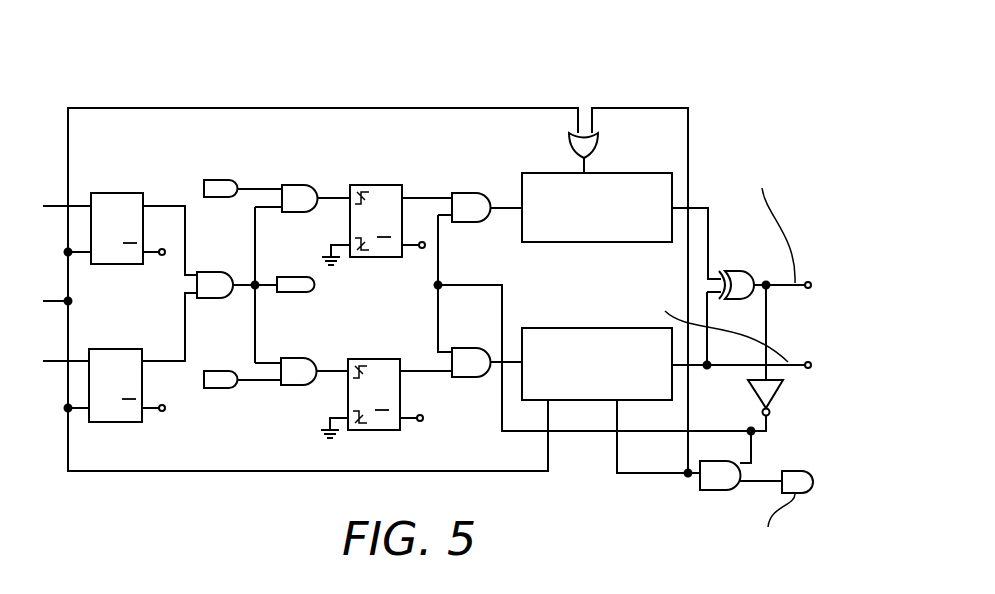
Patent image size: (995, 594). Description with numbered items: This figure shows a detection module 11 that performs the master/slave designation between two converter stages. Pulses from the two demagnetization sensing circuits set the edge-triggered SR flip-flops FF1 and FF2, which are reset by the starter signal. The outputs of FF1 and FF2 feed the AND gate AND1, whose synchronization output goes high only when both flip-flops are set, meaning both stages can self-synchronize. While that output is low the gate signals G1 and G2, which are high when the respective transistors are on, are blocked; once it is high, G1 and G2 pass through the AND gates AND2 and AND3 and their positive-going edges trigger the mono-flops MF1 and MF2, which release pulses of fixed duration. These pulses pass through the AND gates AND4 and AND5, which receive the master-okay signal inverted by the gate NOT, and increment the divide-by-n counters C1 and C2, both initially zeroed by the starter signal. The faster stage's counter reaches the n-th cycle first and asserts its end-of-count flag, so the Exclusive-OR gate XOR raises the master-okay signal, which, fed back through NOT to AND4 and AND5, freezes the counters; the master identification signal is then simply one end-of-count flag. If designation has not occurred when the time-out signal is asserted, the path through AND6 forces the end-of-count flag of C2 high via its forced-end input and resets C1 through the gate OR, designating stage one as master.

The detection module 11 is at (645, 53).
The edge-triggered SR flip-flop FF1 is at (117, 212).
The edge-triggered SR flip-flop FF2 is at (115, 369).
The gate drive signal G1 is at (226, 186).
The gate drive signal G2 is at (224, 378).
The AND gate AND1 is at (224, 272).
The AND gate AND2 is at (296, 186).
The AND gate AND3 is at (296, 360).
The AND gate AND4 is at (470, 193).
The AND gate AND5 is at (465, 376).
The AND gate AND6 is at (718, 489).
The mono-flop MF1 is at (377, 223).
The mono-flop MF2 is at (375, 396).
The divide-by-n counter C1 is at (596, 220).
The divide-by-n counter C2 is at (594, 377).
The OR gate OR is at (565, 146).
The Exclusive-OR gate XOR is at (741, 272).
The NOT gate NOT is at (786, 398).